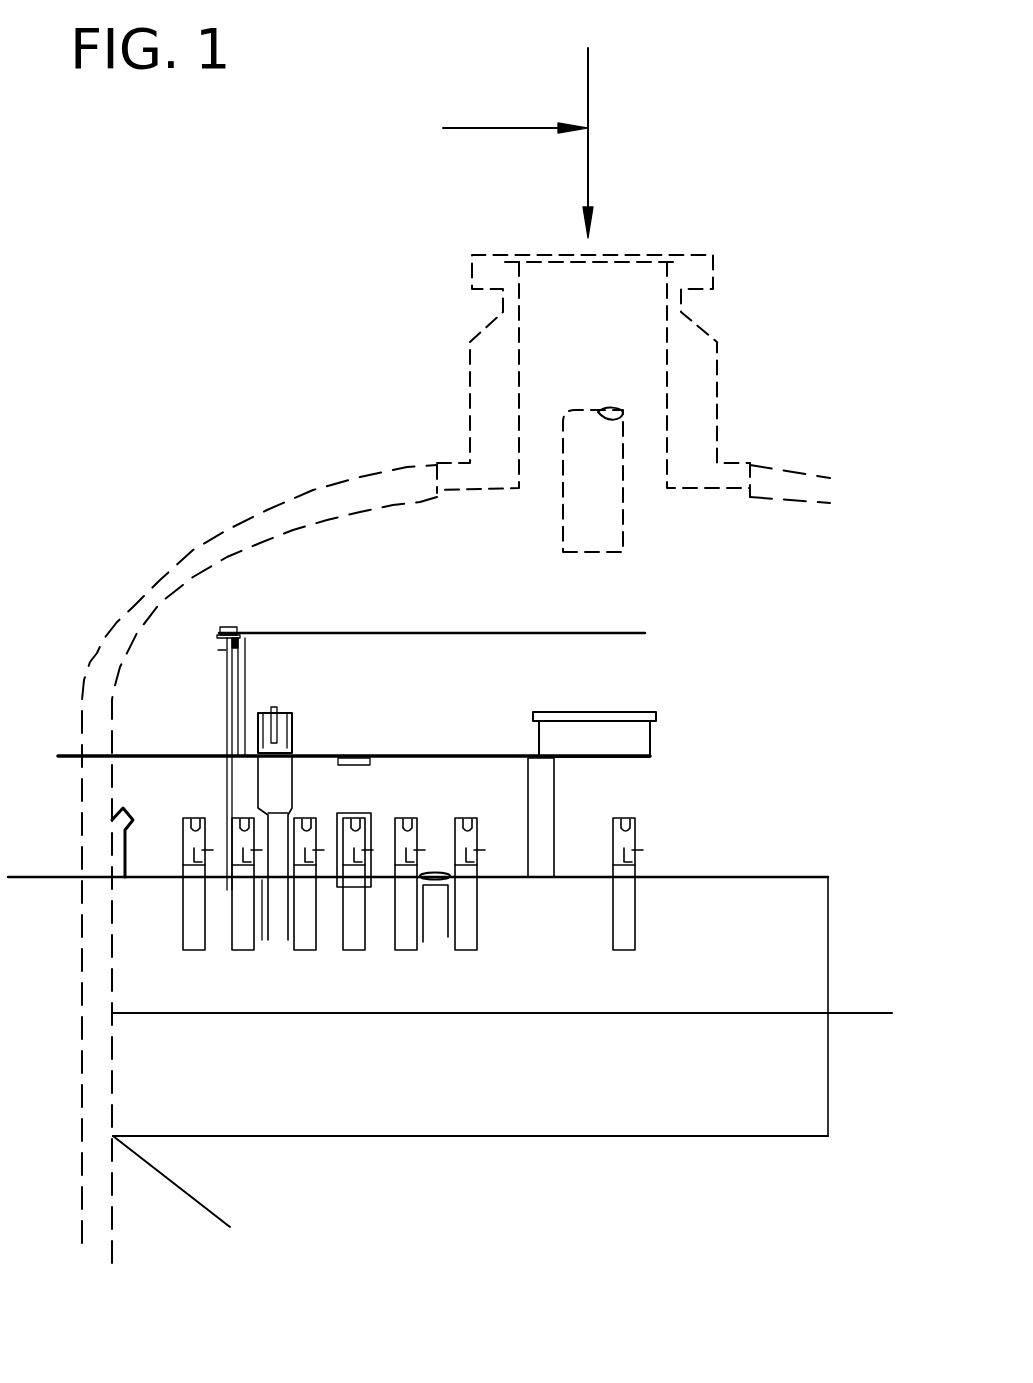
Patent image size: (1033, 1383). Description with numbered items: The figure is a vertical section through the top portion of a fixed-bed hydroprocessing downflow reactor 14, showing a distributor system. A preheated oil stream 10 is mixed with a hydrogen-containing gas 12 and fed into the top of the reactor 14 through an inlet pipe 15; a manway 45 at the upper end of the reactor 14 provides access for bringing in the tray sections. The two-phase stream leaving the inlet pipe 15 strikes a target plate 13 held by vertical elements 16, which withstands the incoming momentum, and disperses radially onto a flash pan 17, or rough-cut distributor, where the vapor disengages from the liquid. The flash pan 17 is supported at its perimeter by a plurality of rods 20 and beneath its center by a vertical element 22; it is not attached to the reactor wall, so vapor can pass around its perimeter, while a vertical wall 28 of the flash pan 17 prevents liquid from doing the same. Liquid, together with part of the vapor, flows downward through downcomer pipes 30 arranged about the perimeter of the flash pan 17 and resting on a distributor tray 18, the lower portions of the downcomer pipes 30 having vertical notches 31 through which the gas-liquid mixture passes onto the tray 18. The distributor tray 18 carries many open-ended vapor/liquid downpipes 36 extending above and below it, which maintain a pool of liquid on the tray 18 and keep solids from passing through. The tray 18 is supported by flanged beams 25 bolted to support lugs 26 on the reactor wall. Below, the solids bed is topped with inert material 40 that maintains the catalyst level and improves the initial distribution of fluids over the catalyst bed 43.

The preheated oil stream 10 is at (588, 80).
The hydrogen-containing gas 12 is at (502, 127).
The manway 45 is at (712, 272).
The downflow reactor 14 is at (396, 383).
The inlet pipe 15 is at (623, 502).
The vertical wall 28 is at (248, 640).
The rods 20 is at (223, 717).
The downcomer pipes 30 is at (293, 730).
The vertical notches 31 is at (287, 808).
The target plate 13 is at (630, 712).
The vertical elements 16 is at (650, 740).
The flash pan 17 is at (640, 760).
The vertical element 22 is at (555, 800).
The distributor tray 18 is at (727, 880).
The inert material 40 is at (792, 1047).
The catalyst bed 43 is at (770, 1208).
The support lugs 26 is at (163, 878).
The flanged beams 25 is at (448, 937).
The vapor/liquid downpipes 36 is at (475, 907).